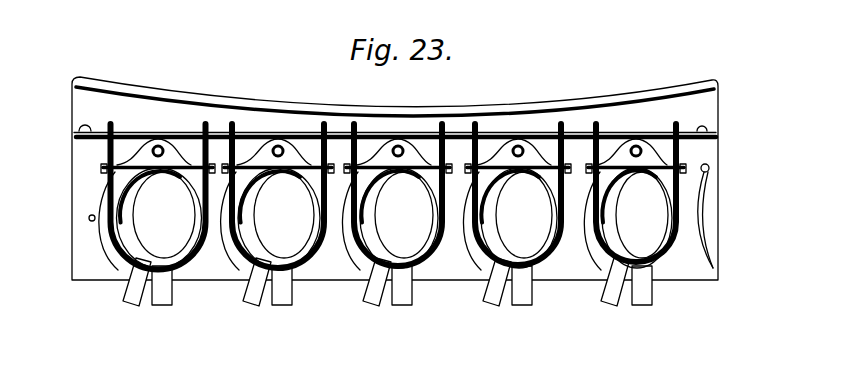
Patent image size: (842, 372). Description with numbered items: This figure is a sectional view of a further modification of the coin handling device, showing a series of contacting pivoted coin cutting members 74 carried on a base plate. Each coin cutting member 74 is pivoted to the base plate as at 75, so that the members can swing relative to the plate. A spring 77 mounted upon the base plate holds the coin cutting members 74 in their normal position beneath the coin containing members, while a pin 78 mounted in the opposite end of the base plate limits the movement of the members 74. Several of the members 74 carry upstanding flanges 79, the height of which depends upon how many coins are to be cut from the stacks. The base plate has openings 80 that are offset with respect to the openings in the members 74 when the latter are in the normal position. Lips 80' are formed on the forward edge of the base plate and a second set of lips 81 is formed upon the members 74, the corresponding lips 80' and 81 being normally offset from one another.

The coin cutting member 74 is at (117, 262).
The pivot 75 is at (637, 147).
The spring 77 is at (704, 232).
The pin 78 is at (89, 218).
The upstanding flange 79 is at (135, 188).
The opening 80 is at (400, 215).
The lip 80' is at (403, 303).
The lip 81 is at (125, 302).